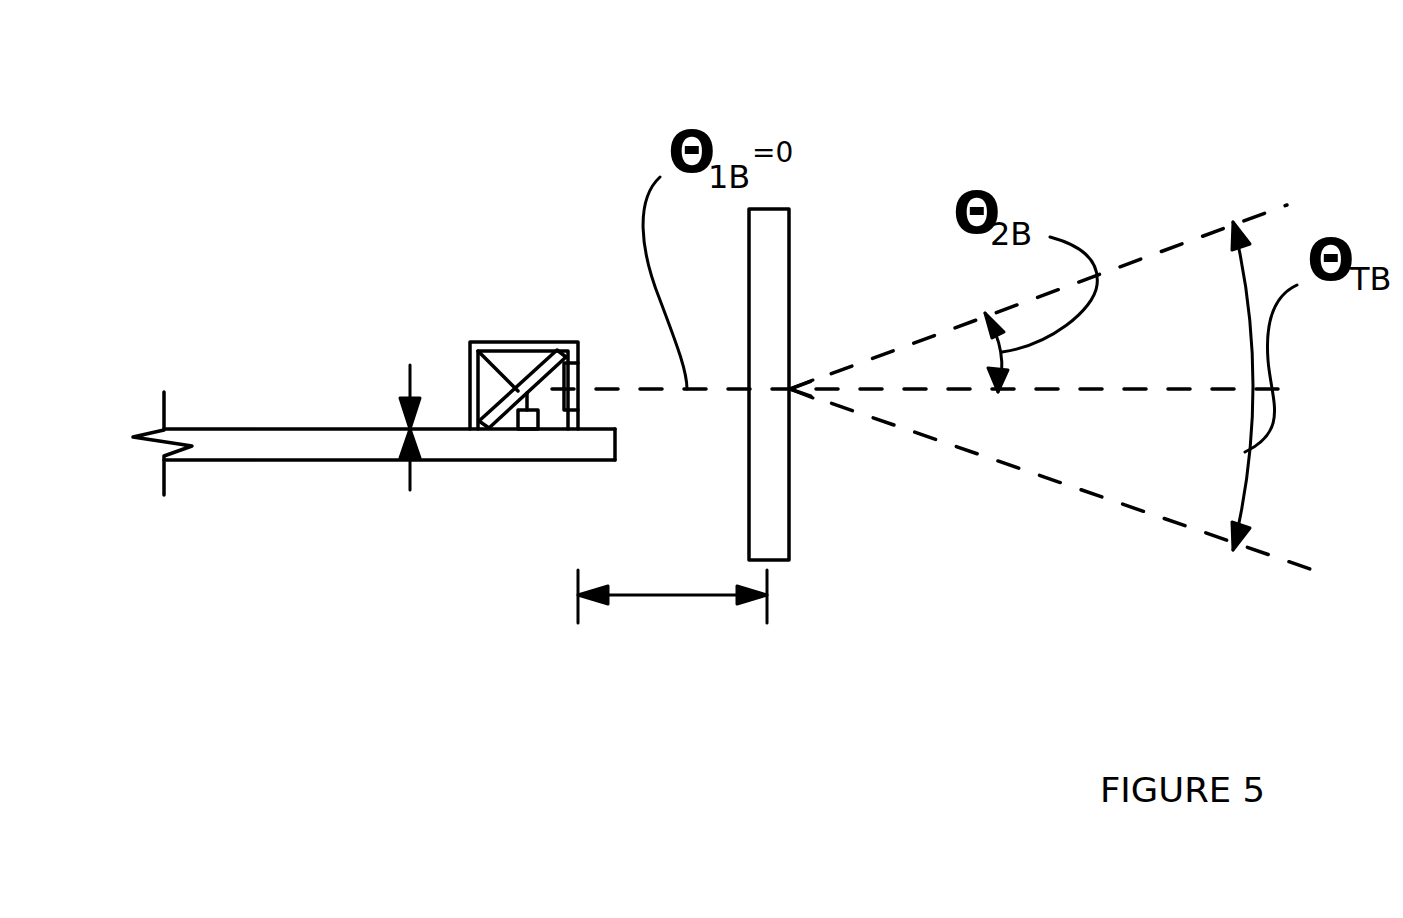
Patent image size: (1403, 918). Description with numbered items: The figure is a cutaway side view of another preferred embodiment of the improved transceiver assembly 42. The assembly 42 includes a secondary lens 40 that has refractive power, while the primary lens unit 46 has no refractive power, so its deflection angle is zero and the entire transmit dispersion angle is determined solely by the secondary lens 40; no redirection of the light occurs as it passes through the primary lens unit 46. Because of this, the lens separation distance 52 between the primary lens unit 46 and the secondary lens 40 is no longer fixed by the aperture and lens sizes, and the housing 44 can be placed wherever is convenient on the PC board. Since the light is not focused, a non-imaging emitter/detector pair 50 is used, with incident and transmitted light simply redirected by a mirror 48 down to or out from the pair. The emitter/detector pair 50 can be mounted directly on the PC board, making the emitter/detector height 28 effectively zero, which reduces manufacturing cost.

The emitter/detector height 28 is at (395, 418).
The secondary lens 40 is at (790, 510).
The transceiver assembly 42 is at (476, 312).
The housing 44 is at (469, 373).
The primary lens unit 46 is at (580, 372).
The mirror 48 is at (483, 343).
The emitter/detector pair 50 is at (523, 428).
The lens separation distance 52 is at (672, 597).